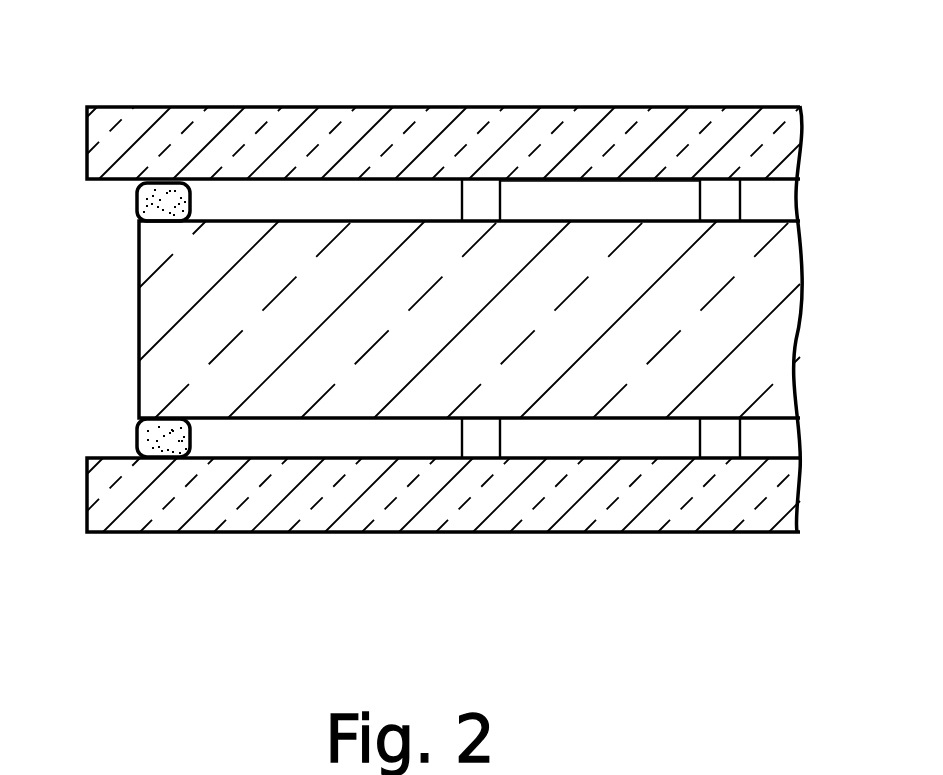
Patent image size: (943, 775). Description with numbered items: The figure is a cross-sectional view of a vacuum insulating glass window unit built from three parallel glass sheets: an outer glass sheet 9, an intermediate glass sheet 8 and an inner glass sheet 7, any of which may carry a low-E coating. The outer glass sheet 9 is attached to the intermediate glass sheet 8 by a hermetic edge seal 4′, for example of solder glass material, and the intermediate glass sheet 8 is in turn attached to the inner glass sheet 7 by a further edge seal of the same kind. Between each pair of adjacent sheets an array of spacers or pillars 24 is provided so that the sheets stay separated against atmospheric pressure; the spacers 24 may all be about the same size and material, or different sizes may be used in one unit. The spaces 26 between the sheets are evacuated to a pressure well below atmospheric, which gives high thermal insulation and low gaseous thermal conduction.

The edge seal 4′ is at (163, 197).
The inner glass sheet 7 is at (257, 497).
The intermediate glass sheet 8 is at (162, 308).
The outer glass sheet 9 is at (347, 107).
The spacers or pillars 24 is at (480, 198).
The spaces 26 is at (637, 197).